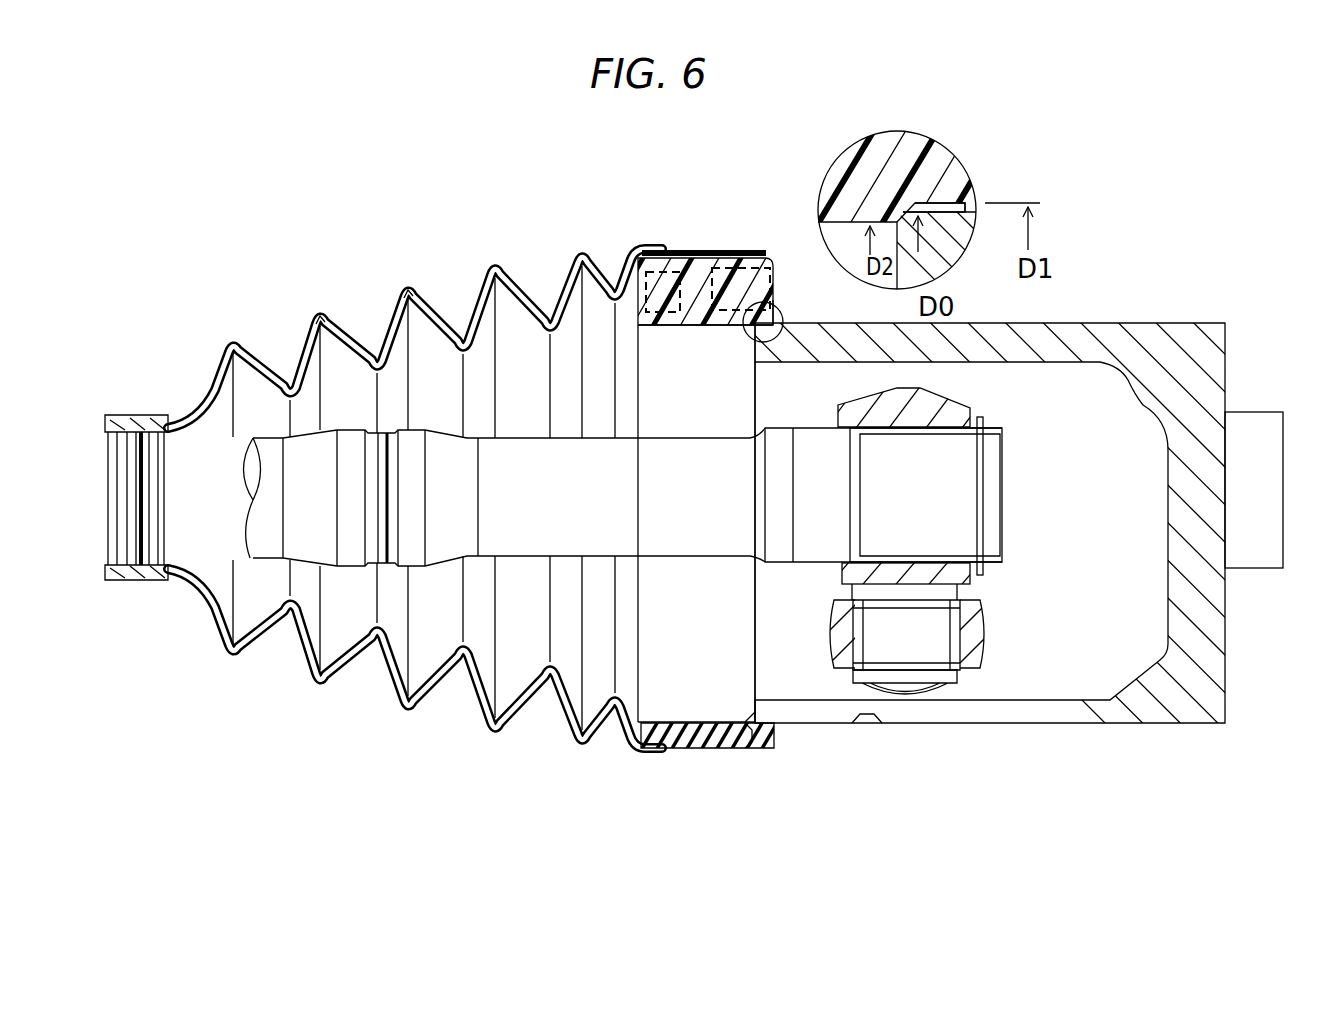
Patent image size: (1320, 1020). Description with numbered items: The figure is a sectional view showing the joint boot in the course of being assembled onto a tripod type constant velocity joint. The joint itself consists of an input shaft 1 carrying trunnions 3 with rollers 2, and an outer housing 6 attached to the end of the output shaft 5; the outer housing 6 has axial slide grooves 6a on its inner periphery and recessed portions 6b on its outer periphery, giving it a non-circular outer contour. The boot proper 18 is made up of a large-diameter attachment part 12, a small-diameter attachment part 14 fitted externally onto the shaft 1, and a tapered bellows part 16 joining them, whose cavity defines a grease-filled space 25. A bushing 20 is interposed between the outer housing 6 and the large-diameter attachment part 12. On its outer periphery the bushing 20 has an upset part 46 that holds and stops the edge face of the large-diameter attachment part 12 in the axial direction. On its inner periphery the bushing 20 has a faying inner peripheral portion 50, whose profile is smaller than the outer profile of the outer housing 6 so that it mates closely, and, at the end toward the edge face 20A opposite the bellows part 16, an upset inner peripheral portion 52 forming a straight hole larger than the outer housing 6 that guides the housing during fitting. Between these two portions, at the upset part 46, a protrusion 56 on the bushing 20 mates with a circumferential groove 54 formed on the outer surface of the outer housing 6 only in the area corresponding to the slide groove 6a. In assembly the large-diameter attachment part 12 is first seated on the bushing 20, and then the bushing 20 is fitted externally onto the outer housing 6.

The input shaft 1 is at (530, 540).
The roller 2 is at (975, 630).
The trunnion 3 is at (917, 658).
The output shaft 5 is at (1253, 555).
The outer housing 6 is at (1068, 334).
The slide groove 6a is at (787, 717).
The recessed portion 6b is at (947, 243).
The large-diameter attachment part 12 is at (669, 238).
The small-diameter attachment part 14 is at (147, 592).
The bellows part 16 is at (430, 700).
The boot proper 18 is at (407, 280).
The bushing 20 is at (751, 250).
The edge face of bushing 20A is at (791, 305).
The grease-filled space 25 is at (334, 350).
The upset part 46 is at (750, 746).
The faying inner peripheral portion 50 is at (693, 327).
The upset inner peripheral portion 52 is at (940, 206).
The groove 54 is at (875, 720).
The protrusion 56 is at (752, 717).